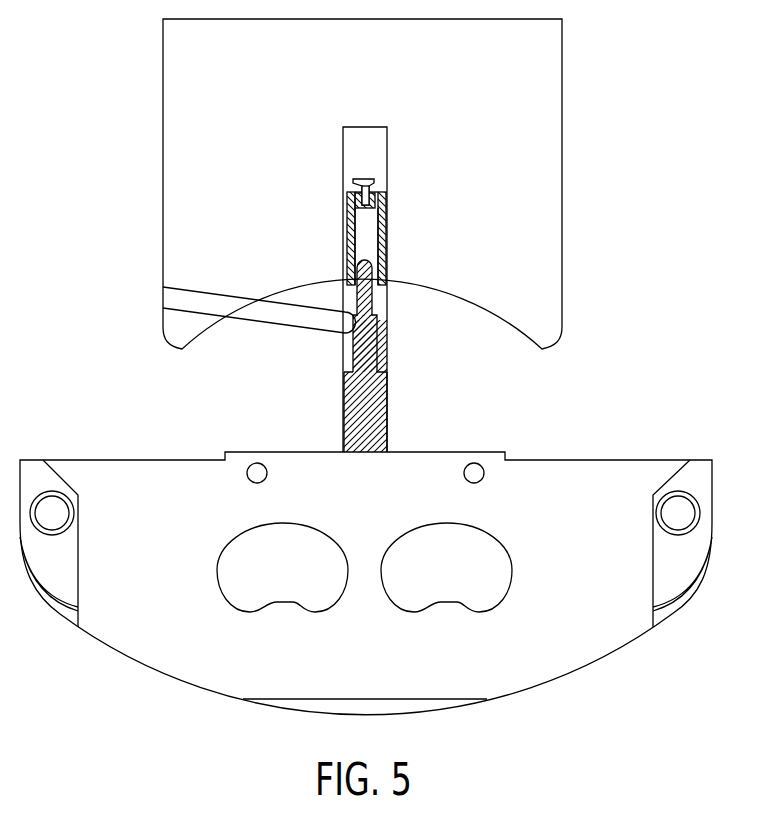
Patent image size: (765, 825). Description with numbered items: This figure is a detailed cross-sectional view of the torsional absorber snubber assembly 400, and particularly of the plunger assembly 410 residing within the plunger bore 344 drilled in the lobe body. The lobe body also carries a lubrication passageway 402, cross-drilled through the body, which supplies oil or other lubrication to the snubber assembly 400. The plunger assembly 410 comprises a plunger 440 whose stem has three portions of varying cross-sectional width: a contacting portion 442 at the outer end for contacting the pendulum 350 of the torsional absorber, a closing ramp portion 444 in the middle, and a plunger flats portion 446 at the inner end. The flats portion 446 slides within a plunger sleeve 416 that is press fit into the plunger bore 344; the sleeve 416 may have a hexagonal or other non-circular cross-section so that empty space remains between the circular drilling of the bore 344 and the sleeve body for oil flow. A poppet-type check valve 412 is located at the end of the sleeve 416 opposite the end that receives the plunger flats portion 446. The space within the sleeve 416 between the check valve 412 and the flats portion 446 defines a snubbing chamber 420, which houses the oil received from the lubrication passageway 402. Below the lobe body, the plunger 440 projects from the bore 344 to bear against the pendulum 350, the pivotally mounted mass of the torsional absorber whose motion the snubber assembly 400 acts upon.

The plunger bore 344 is at (349, 143).
The torsional absorber snubber assembly 400 is at (233, 224).
The lubrication passageway 402 is at (261, 314).
The plunger assembly 410 is at (362, 307).
The poppet-type check valve 412 is at (373, 182).
The plunger sleeve 416 is at (380, 218).
The snubbing chamber 420 is at (373, 240).
The plunger flats portion 446 is at (373, 297).
The closing ramp portion 444 is at (376, 317).
The contacting portion 442 is at (388, 392).
The plunger 440 is at (374, 422).
The pendulum 350 is at (594, 628).